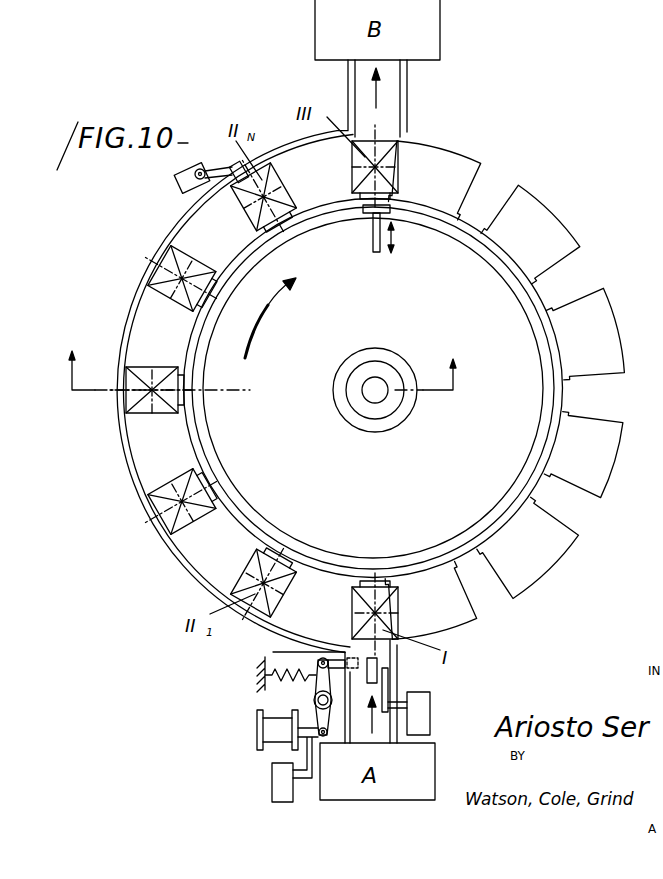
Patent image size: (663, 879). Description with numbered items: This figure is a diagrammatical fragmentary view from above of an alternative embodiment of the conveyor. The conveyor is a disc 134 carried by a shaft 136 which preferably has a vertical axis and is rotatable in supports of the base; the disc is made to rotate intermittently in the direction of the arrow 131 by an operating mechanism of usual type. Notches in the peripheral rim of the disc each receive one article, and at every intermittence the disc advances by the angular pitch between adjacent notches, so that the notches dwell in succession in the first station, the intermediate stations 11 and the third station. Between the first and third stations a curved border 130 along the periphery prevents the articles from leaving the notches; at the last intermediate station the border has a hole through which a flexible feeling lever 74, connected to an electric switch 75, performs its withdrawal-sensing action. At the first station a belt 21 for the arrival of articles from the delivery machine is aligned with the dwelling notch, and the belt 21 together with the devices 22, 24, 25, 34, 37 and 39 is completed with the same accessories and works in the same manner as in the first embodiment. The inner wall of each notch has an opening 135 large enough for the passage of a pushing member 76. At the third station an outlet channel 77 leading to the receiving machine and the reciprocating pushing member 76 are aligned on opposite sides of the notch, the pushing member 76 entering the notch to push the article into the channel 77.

The intermediate stations 11 is at (261, 370).
The belt 21 is at (387, 731).
The arrow indicating feed direction from station A 22 is at (368, 713).
The device 24 is at (378, 661).
The device 25 is at (430, 704).
The device 34 is at (279, 665).
The device 37 is at (257, 726).
The device 39 is at (272, 779).
The feeling lever 74 is at (230, 163).
The electric switch 75 is at (180, 189).
The pushing member 76 is at (372, 238).
The outlet channel 77 is at (397, 100).
The curved border 130 is at (150, 262).
The arrow 131 is at (287, 318).
The disc 134 is at (373, 388).
The opening 135 is at (466, 557).
The shaft 136 is at (377, 399).